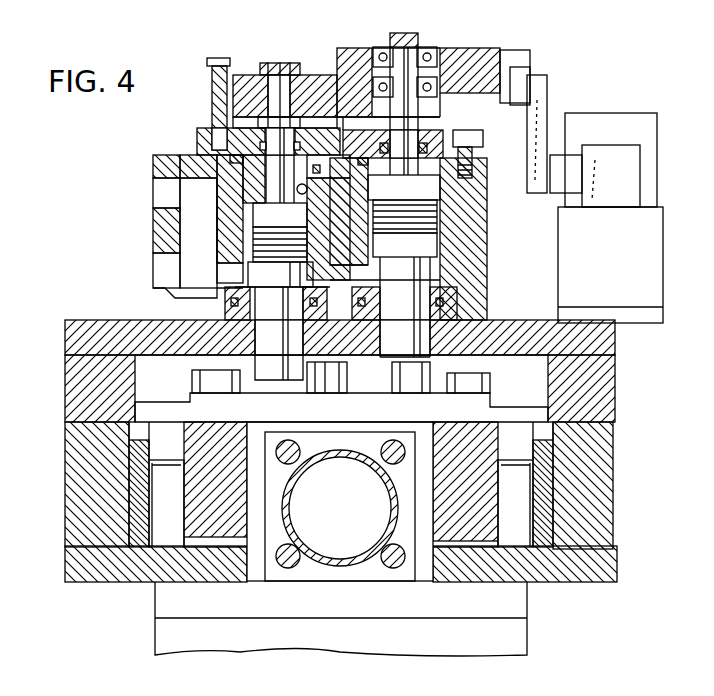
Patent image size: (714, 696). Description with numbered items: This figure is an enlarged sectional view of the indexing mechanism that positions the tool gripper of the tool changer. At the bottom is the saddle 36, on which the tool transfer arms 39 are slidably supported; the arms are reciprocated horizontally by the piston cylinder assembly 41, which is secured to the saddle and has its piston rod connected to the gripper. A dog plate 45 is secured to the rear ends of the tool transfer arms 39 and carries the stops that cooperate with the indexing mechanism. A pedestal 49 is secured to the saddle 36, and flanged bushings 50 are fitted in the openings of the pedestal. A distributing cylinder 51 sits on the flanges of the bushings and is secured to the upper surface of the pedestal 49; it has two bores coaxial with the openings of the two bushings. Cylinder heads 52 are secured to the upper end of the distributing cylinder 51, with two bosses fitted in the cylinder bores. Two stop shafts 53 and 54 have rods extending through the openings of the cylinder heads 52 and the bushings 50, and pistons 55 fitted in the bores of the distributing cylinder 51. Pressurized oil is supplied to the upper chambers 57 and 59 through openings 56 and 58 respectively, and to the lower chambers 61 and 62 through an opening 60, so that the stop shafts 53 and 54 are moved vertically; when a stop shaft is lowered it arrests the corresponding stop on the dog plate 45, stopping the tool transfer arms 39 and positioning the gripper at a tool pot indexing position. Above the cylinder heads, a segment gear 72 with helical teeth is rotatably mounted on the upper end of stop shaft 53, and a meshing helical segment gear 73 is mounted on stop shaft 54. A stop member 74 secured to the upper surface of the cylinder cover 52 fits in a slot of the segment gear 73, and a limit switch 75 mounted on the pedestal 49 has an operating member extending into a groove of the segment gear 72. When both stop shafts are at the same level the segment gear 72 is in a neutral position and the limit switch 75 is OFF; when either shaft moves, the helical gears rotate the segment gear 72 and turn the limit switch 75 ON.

The saddle 36 is at (567, 573).
The tool transfer arms 39 is at (480, 503).
The piston cylinder assembly 41 is at (283, 520).
The dog plate 45 is at (207, 407).
The pedestal 49 is at (610, 340).
The flanged bushings 50 is at (187, 340).
The distributing cylinder 51 is at (262, 292).
The cylinder heads 52 is at (200, 140).
The stop shaft 53 is at (423, 265).
The stop shaft 54 is at (268, 302).
The pistons 55 is at (228, 172).
The opening 56 is at (373, 193).
The upper chamber 57 is at (437, 185).
The opening 58 is at (300, 185).
The upper chamber 59 is at (250, 182).
The opening 60 is at (225, 273).
The lower chamber 61 is at (430, 275).
The lower chamber 62 is at (240, 237).
The segment gear 72 is at (443, 53).
The segment gear 73 is at (243, 80).
The stop member 74 is at (207, 95).
The limit switch 75 is at (623, 155).